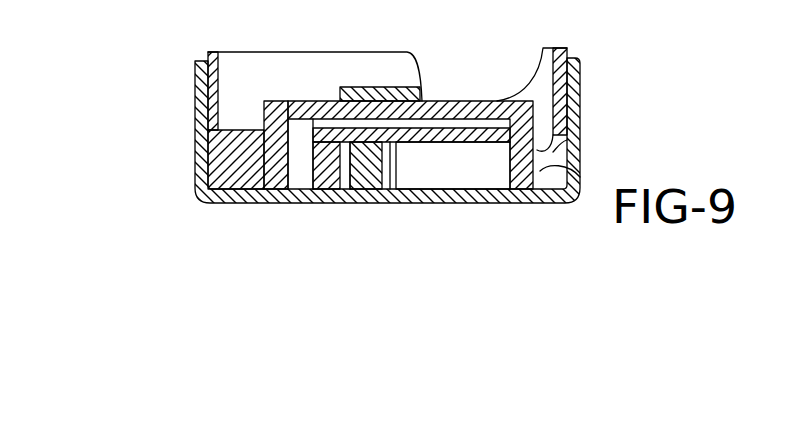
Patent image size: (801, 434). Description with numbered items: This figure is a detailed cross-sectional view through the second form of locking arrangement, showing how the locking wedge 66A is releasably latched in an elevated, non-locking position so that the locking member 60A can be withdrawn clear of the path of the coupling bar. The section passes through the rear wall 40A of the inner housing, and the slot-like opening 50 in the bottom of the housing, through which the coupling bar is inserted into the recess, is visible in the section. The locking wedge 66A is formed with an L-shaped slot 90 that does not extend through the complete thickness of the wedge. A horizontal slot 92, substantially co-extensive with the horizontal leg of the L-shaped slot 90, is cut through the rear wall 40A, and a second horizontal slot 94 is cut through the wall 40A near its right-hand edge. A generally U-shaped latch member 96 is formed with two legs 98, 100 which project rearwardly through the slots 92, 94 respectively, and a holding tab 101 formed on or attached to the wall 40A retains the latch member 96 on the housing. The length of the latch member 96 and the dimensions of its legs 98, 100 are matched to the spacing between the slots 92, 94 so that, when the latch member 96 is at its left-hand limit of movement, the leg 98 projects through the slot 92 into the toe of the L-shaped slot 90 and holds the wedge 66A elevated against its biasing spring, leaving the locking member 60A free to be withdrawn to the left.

The holding tab 101 is at (347, 88).
The horizontal slot 92 is at (300, 133).
The rear wall of inner housing 40A is at (417, 126).
The latch member 96 is at (478, 105).
The second horizontal slot 94 is at (567, 142).
The leg of latch member 100 is at (580, 177).
The leg of latch member 98 is at (210, 175).
The L-shaped slot 90 is at (308, 178).
The locking member 60A is at (376, 180).
The locking wedge 66A is at (223, 162).
The slot-like opening 50 is at (437, 177).